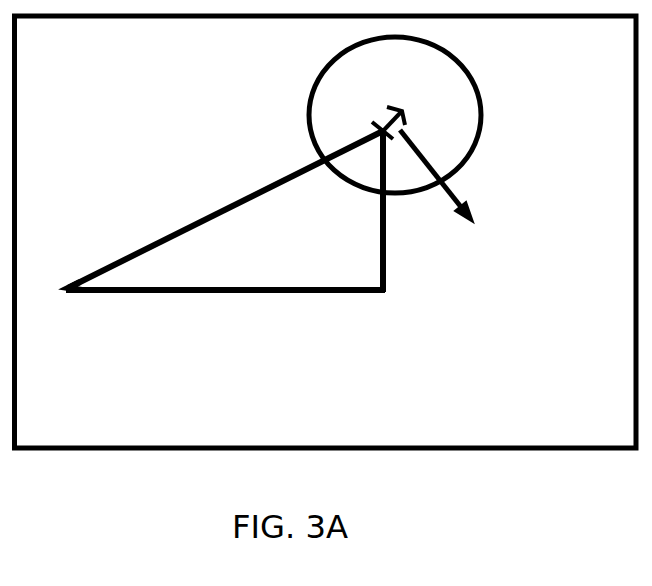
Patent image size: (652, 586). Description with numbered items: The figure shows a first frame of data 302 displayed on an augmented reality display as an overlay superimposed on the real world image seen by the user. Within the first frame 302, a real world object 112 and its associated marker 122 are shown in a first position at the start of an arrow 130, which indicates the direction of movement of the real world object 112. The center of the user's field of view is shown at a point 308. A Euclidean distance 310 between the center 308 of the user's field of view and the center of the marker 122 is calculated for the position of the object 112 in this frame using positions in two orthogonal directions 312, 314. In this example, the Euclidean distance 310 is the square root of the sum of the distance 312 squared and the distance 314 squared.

The first frame of data 302 is at (89, 73).
The real world object 112 is at (450, 115).
The marker 122 is at (299, 110).
The arrow 130 is at (477, 176).
The center of the user's field of view 308 is at (63, 234).
The Euclidean distance 310 is at (225, 209).
The distance in first orthogonal direction 312 is at (225, 349).
The distance in second orthogonal direction 314 is at (449, 220).